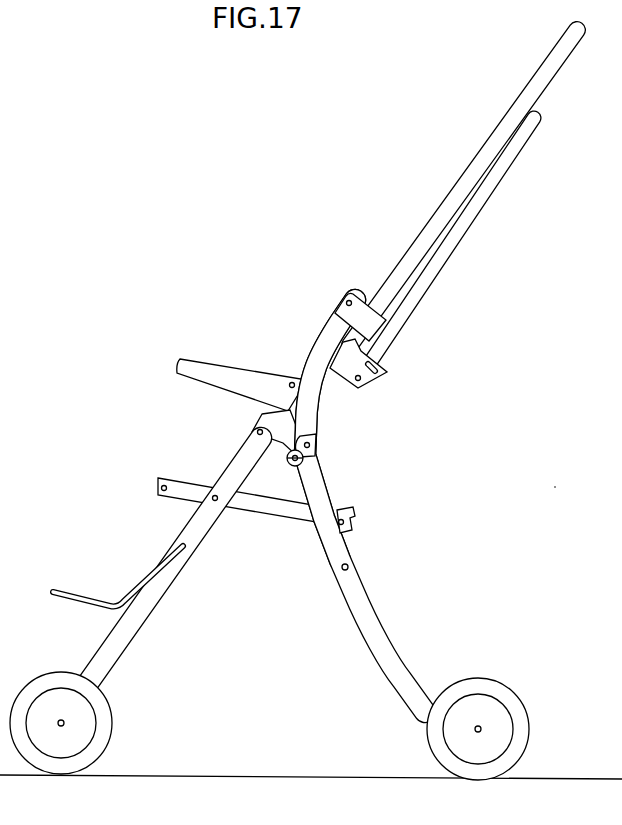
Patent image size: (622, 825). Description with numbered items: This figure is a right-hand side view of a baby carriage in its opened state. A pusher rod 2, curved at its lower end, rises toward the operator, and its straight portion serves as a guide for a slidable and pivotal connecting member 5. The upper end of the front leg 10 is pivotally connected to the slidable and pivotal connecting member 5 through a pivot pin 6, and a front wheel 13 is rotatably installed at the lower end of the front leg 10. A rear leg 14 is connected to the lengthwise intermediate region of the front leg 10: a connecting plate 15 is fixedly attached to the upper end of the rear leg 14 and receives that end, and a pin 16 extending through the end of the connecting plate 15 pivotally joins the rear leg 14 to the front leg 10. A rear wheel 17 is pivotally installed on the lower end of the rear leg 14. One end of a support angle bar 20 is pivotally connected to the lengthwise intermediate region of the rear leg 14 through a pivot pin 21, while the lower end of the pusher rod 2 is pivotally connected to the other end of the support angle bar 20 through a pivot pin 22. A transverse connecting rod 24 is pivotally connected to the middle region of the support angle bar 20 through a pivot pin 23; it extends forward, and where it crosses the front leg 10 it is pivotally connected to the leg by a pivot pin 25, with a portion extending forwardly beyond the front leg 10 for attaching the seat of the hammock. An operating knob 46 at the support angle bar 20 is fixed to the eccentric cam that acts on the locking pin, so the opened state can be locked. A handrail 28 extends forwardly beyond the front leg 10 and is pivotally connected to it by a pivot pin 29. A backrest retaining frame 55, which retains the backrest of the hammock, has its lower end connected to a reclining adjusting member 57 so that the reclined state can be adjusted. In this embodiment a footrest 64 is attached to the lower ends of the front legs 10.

The pusher rod 2 is at (443, 210).
The backrest retaining frame 55 is at (472, 217).
The slidable and pivotal connecting member 5 is at (363, 308).
The pivot pin 6 is at (346, 299).
The reclining adjusting member 57 is at (388, 370).
The handrail 28 is at (198, 368).
The pivot pin 29 is at (290, 381).
The connecting plate 15 is at (267, 417).
The pin 16 is at (257, 433).
The pivot pin 22 is at (312, 442).
The operating knob 46 is at (304, 461).
The support angle bar 20 is at (327, 487).
The pivot pin 23 is at (355, 514).
The pivot pin 21 is at (349, 566).
The rear leg 14 is at (377, 623).
The rear wheel 17 is at (497, 685).
The transverse connecting rod 24 is at (273, 510).
The pivot pin 25 is at (216, 502).
The front leg 10 is at (135, 620).
The footrest 64 is at (72, 591).
The front wheel 13 is at (109, 725).